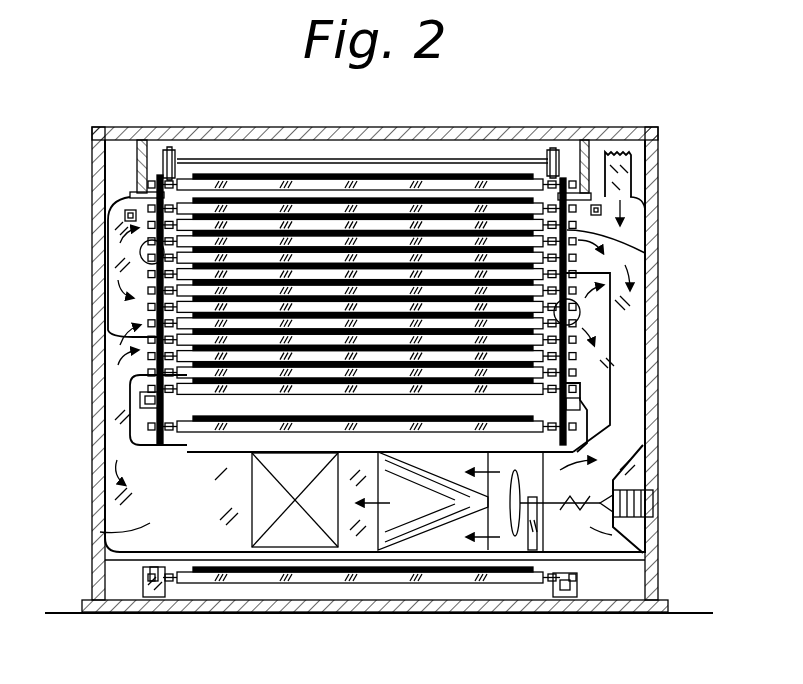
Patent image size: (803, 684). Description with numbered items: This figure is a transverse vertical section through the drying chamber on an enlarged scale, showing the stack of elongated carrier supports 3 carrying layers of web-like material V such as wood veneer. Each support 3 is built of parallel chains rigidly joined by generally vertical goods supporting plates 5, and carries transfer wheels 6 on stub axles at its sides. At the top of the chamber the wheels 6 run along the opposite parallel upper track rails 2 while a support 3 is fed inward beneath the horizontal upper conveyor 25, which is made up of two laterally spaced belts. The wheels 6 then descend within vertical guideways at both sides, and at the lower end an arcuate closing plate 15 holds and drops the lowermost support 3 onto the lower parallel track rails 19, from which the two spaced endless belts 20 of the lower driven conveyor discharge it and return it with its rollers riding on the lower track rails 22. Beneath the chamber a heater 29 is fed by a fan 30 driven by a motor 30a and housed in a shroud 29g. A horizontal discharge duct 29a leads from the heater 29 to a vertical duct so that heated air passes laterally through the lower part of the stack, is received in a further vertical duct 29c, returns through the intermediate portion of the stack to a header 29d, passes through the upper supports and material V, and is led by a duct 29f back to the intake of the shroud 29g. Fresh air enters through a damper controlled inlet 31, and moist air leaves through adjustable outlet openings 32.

The upper track rails 2 is at (147, 178).
The carrier supports 3 is at (418, 183).
The goods supporting plates 5 is at (510, 193).
The transfer wheels 6 is at (162, 178).
The closing plate 15 is at (585, 410).
The lower track rails 19 is at (600, 445).
The endless belts 20 is at (172, 430).
The lower track rails 22 is at (580, 590).
The upper conveyor 25 is at (173, 170).
The heaters 29 is at (263, 500).
The horizontal discharge duct 29a is at (625, 235).
The further vertical duct 29c is at (605, 345).
The header duct 29d is at (133, 243).
The return duct 29f is at (653, 360).
The fan shroud 29g is at (607, 540).
The fan 30 is at (560, 487).
The fan motor 30a is at (653, 495).
The damper controlled inlet 31 is at (620, 185).
The adjustable outlet openings 32 is at (412, 565).
The web-like material V is at (160, 365).